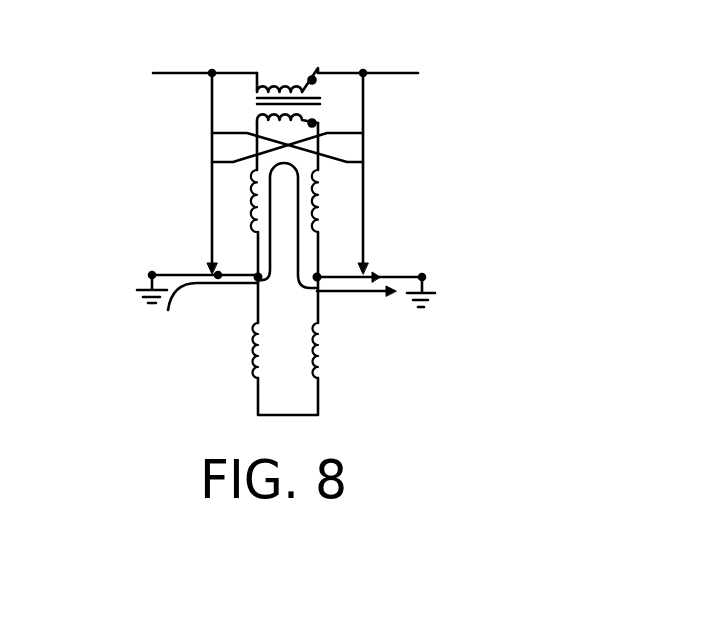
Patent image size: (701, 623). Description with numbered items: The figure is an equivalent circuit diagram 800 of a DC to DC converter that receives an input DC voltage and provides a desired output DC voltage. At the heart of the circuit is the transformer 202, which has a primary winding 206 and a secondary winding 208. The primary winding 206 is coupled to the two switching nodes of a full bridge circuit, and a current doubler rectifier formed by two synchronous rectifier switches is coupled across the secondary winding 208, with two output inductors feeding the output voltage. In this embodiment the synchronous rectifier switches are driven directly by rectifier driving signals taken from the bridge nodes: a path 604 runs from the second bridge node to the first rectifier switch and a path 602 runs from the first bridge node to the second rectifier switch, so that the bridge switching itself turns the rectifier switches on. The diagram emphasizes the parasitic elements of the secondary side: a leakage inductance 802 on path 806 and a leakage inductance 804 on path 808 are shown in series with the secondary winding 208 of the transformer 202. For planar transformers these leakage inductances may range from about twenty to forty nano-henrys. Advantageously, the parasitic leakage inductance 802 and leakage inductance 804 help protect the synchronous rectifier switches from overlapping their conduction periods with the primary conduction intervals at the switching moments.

The equivalent circuit diagram 800 is at (104, 44).
The transformer 202 is at (274, 67).
The primary winding 206 is at (326, 61).
The secondary winding 208 is at (307, 109).
The path 602 is at (211, 107).
The path 604 is at (365, 107).
The leakage inductance 802 is at (172, 199).
The leakage inductance 804 is at (396, 201).
The path 806 is at (247, 146).
The path 808 is at (327, 147).